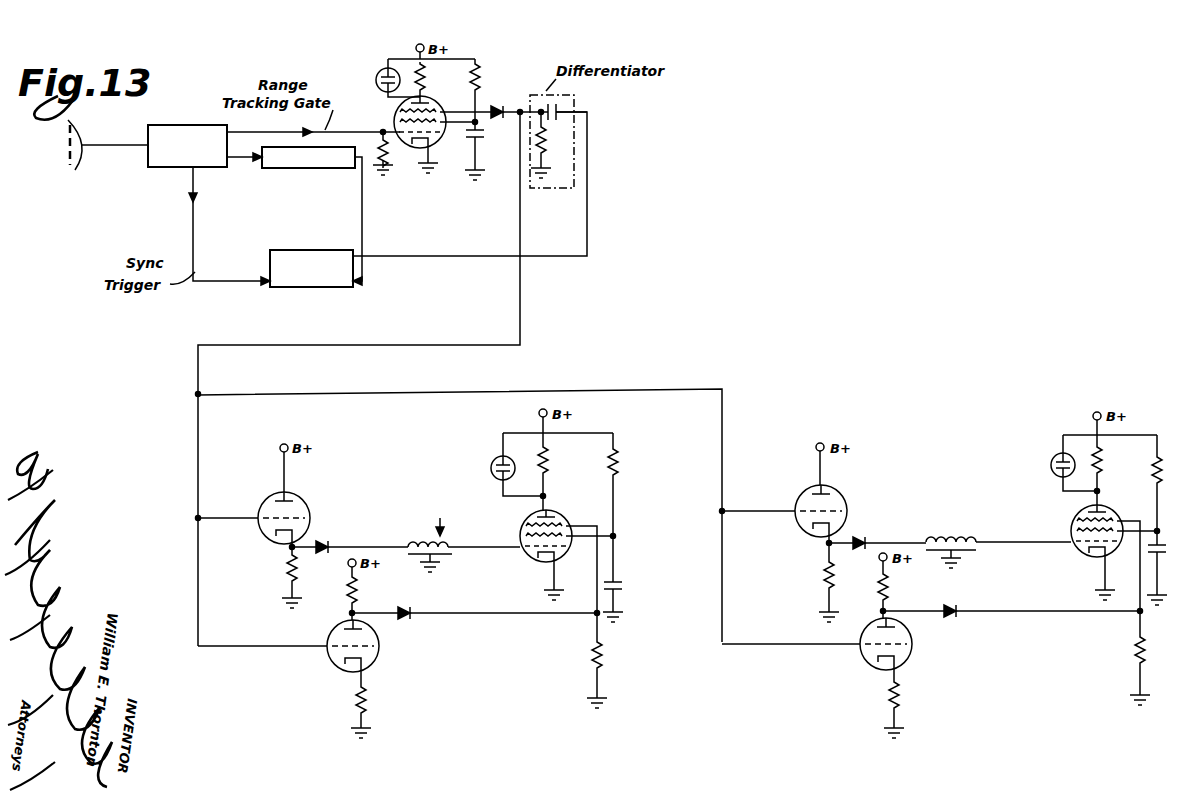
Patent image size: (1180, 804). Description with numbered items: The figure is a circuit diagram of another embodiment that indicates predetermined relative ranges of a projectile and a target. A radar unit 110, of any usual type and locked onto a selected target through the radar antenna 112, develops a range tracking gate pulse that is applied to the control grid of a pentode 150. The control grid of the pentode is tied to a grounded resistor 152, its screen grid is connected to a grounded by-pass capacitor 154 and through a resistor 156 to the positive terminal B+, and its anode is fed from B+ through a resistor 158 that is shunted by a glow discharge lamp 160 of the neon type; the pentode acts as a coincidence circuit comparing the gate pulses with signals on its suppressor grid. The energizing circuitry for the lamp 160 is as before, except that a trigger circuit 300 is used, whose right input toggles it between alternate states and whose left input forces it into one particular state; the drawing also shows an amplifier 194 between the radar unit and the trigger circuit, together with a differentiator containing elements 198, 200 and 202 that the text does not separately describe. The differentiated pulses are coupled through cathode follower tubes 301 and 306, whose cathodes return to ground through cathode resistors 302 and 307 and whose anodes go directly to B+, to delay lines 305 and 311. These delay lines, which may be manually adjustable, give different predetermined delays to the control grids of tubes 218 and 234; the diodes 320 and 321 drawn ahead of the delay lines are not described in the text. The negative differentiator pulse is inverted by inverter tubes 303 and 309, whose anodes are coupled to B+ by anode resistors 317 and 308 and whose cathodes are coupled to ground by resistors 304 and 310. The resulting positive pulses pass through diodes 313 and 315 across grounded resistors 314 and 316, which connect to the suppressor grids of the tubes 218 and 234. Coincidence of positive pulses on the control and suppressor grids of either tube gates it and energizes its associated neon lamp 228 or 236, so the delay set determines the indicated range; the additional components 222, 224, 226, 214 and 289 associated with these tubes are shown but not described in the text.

The radar unit 110 is at (212, 124).
The radar antenna 112 is at (76, 160).
The amplifier 194 is at (304, 169).
The trigger circuit 300 is at (354, 250).
The pentode 150 is at (398, 112).
The grounded resistor 152 is at (386, 158).
The by-pass capacitor 154 is at (471, 138).
The resistor 156 is at (477, 86).
The resistor 158 is at (423, 90).
The glow discharge lamp 160 is at (377, 80).
The differentiator capacitor 198 is at (560, 106).
The differentiator resistor 200 is at (550, 146).
The diode 202 is at (492, 107).
The cathode follower tube 301 is at (266, 513).
The cathode resistor 302 is at (288, 573).
The inverter tube 303 is at (325, 640).
The cathode resistor 304 is at (356, 701).
The delay line 305 is at (450, 546).
The diode 313 is at (405, 616).
The grounded resistor 314 is at (602, 651).
The anode resistor 317 is at (348, 590).
The diode 320 is at (345, 531).
The tube 218 is at (525, 519).
The capacitor 222 is at (620, 583).
The resistor 224 is at (618, 471).
The screen resistor 226 is at (548, 471).
The neon lamp 228 is at (495, 469).
The cathode follower tube 306 is at (840, 491).
The cathode resistor 307 is at (823, 581).
The anode resistor 308 is at (888, 581).
The inverter tube 309 is at (905, 661).
The cathode resistor 310 is at (898, 693).
The delay line 311 is at (966, 536).
The diode 315 is at (955, 614).
The grounded resistor 316 is at (1138, 651).
The diode 321 is at (867, 536).
The tube 234 is at (1073, 522).
The screen bypass capacitor 236 is at (1050, 463).
The resistor 214 is at (1155, 476).
The capacitor 289 is at (1167, 553).